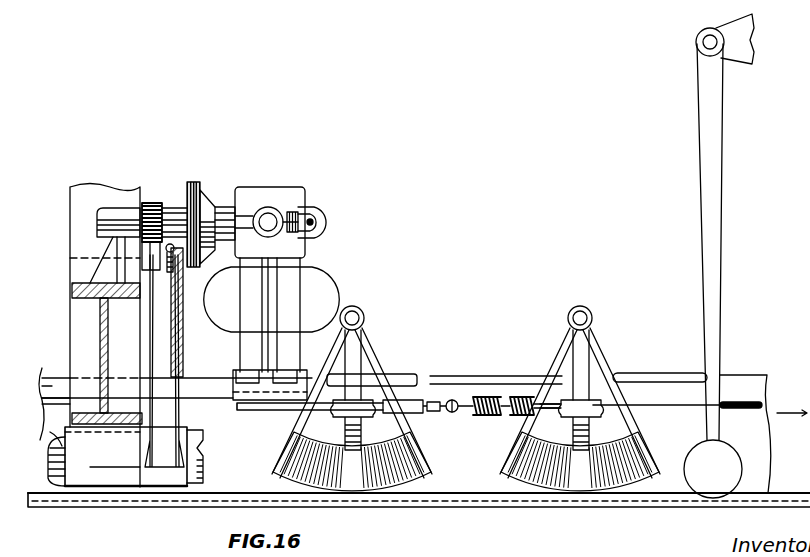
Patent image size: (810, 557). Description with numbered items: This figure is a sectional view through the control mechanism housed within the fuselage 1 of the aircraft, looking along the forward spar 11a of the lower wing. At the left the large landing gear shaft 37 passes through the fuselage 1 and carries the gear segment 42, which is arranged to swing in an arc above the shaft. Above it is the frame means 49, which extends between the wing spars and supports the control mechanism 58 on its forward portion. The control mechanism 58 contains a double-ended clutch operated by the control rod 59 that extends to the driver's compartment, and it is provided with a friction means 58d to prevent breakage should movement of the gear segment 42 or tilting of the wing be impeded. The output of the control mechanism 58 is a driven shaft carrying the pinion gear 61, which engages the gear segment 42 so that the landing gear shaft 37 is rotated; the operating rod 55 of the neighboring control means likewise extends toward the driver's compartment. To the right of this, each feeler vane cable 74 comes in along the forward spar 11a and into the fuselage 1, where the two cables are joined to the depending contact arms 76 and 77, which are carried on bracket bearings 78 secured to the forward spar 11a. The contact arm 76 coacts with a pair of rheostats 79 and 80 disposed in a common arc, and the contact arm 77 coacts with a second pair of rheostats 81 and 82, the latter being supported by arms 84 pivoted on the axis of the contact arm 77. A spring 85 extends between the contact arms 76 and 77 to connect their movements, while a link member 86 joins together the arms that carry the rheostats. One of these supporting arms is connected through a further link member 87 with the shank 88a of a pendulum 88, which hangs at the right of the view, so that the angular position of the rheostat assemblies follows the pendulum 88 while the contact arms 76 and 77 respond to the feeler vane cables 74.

The fuselage 1 is at (95, 496).
The forward spar 11a is at (60, 398).
The landing gear shaft 37 is at (193, 470).
The gear segment 42 is at (183, 351).
The frame means 49 is at (283, 292).
The operating rod 55 is at (268, 172).
The control mechanism 58 is at (243, 203).
The friction means 58d is at (213, 205).
The control rod 59 is at (320, 215).
The pinion gear 61 is at (152, 203).
The cable 74 is at (246, 406).
The contact arm 76 is at (357, 345).
The contact arm 77 is at (582, 350).
The bracket bearing 78 is at (368, 377).
The rheostat 79 is at (345, 490).
The rheostat 80 is at (400, 490).
The rheostat 81 is at (563, 480).
The rheostat 82 is at (613, 480).
The arm 84 is at (562, 388).
The spring 85 is at (483, 397).
The link member 86 is at (494, 392).
The link member 87 is at (362, 338).
The pendulum 88 is at (707, 493).
The shank 88a is at (712, 283).